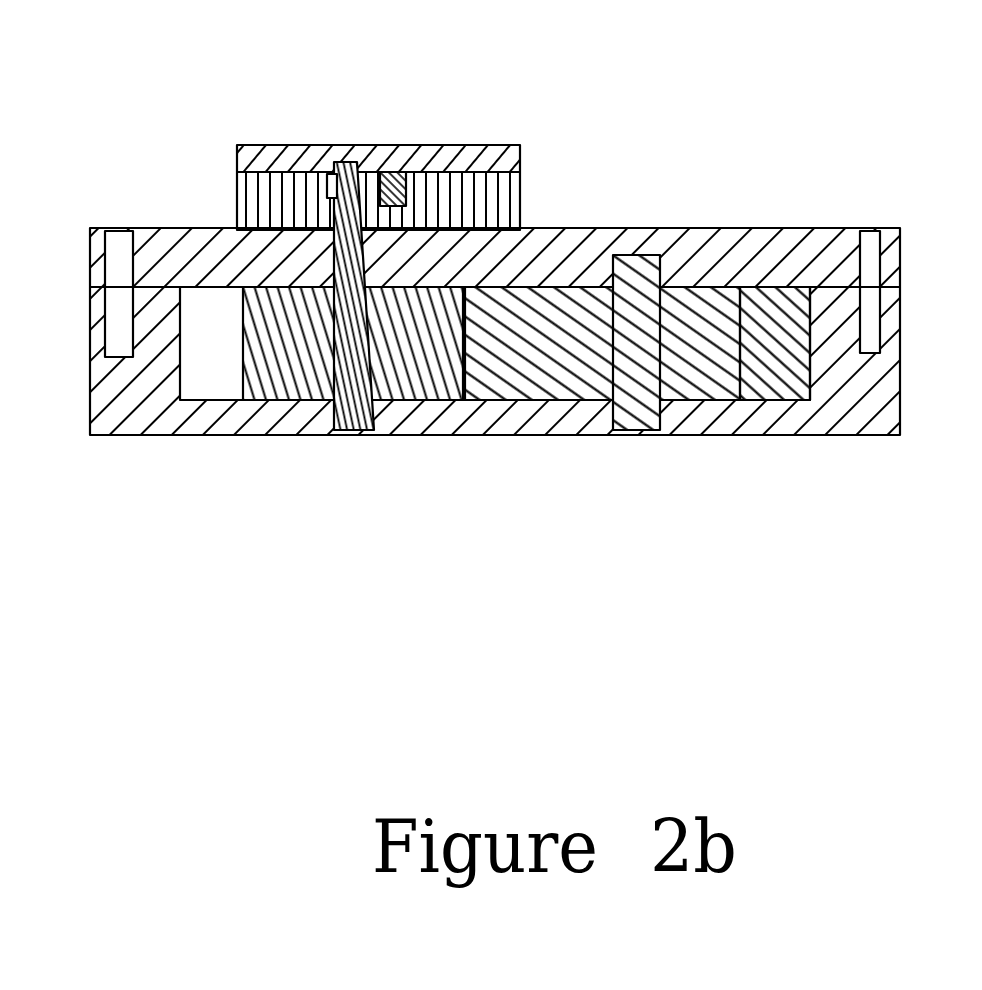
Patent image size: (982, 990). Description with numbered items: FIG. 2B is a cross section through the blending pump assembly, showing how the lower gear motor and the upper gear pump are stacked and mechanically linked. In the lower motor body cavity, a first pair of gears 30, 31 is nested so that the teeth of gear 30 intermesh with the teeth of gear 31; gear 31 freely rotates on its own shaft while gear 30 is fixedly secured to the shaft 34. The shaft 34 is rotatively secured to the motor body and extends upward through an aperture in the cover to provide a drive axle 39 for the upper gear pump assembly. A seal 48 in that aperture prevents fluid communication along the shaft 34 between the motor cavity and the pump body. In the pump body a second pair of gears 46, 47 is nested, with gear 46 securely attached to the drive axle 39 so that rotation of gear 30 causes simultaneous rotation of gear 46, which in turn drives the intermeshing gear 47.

The gear 30 is at (292, 366).
The gear 31 is at (775, 368).
The shaft 34 is at (328, 256).
The drive axle 39 is at (350, 160).
The gear 46 is at (330, 172).
The gear 47 is at (398, 172).
The seal 48 is at (335, 238).